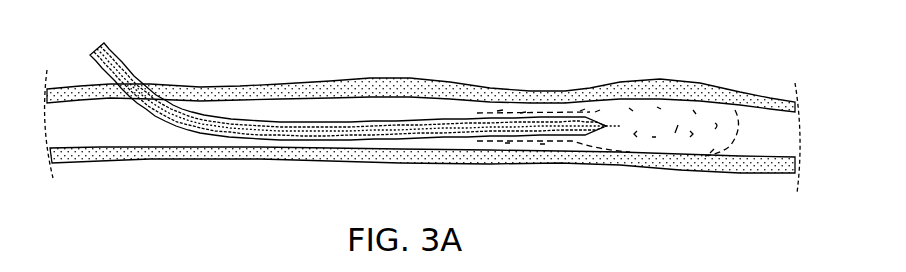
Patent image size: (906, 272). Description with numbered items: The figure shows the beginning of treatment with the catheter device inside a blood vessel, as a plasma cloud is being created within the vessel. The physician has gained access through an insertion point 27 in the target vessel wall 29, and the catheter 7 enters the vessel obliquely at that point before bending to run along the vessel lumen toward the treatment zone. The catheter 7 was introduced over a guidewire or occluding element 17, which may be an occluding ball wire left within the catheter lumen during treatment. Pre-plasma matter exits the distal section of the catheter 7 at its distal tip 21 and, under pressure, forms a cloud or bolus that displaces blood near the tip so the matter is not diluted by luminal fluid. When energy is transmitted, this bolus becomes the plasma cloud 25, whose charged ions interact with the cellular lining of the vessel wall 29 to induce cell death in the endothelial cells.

The catheter 7 is at (355, 117).
The guidewire or occluding element 17 is at (348, 128).
The distal tip 21 is at (584, 133).
The plasma cloud 25 is at (738, 141).
The insertion point 27 is at (165, 87).
The target vessel wall 29 is at (422, 98).